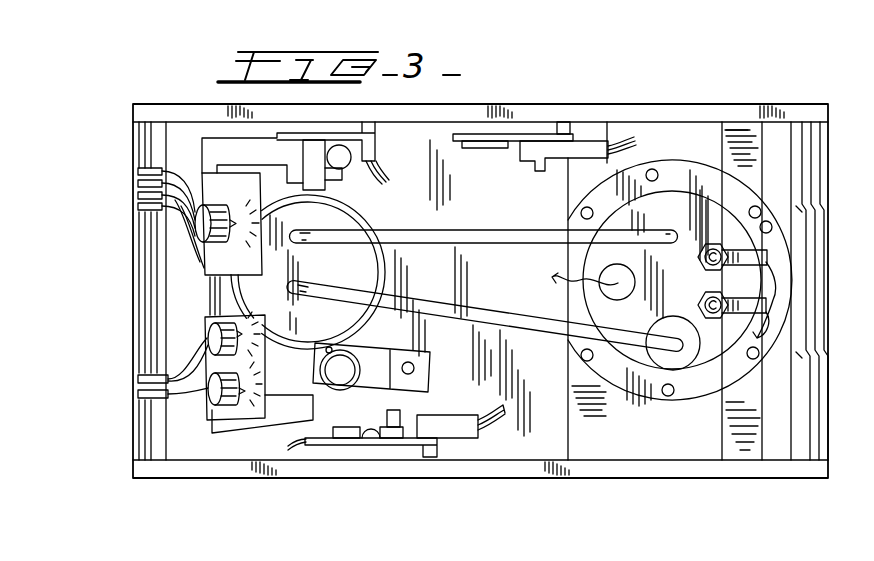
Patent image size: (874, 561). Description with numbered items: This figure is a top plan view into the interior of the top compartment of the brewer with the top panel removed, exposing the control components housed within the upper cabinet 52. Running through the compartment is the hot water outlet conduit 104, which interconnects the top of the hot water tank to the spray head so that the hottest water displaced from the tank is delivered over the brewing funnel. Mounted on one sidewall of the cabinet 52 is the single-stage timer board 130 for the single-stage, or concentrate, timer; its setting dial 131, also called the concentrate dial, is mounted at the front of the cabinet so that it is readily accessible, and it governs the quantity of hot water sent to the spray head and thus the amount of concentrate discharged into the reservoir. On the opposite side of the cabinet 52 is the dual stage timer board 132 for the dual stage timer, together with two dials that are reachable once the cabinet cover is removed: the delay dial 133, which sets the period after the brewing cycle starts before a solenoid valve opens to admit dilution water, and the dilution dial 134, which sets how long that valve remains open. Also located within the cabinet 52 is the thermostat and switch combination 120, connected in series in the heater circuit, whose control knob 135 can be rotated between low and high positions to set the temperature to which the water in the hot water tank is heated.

The upper cabinet 52 is at (598, 110).
The hot water outlet conduit 104 is at (493, 232).
The thermostat and switch combination 120 is at (372, 380).
The single-stage timer board 130 is at (478, 136).
The setting dial 131 is at (200, 222).
The dual stage timer board 132 is at (411, 442).
The delay dial 133 is at (213, 336).
The dilution dial 134 is at (216, 391).
The control knob 135 is at (336, 378).